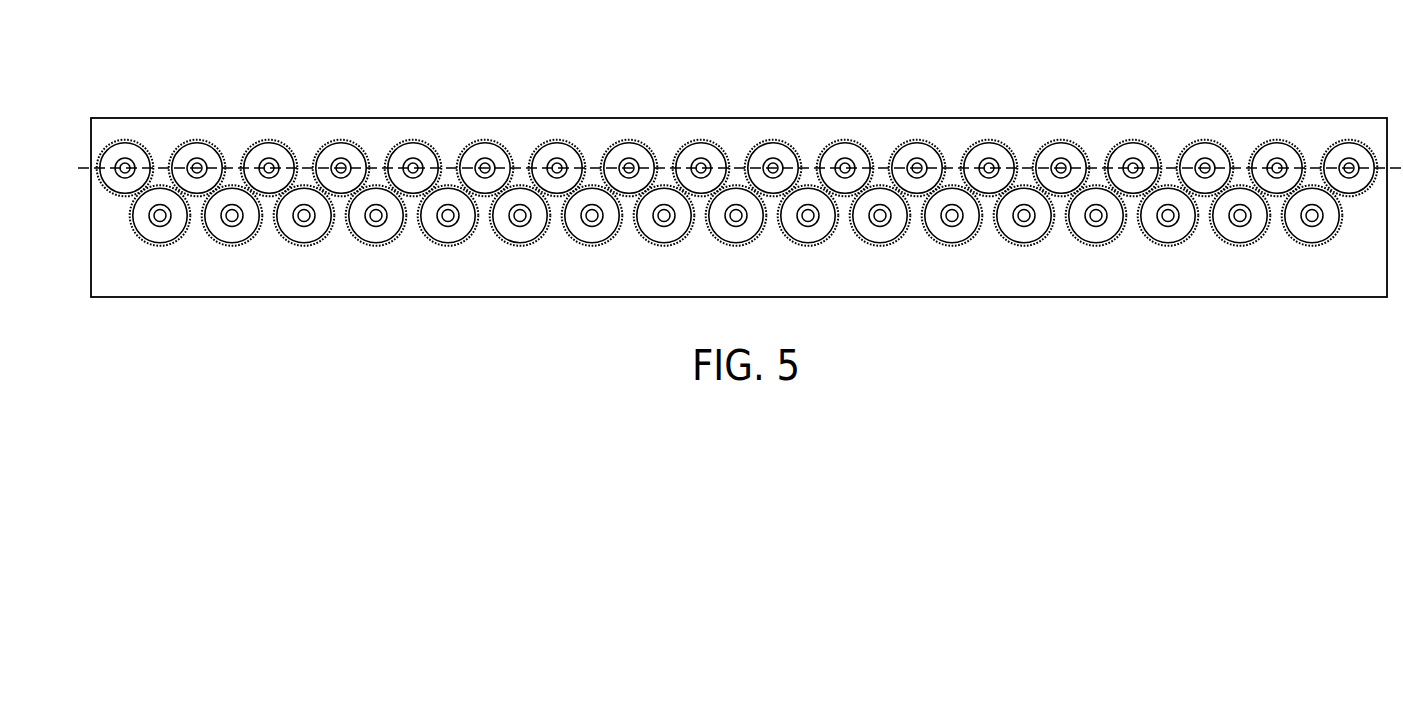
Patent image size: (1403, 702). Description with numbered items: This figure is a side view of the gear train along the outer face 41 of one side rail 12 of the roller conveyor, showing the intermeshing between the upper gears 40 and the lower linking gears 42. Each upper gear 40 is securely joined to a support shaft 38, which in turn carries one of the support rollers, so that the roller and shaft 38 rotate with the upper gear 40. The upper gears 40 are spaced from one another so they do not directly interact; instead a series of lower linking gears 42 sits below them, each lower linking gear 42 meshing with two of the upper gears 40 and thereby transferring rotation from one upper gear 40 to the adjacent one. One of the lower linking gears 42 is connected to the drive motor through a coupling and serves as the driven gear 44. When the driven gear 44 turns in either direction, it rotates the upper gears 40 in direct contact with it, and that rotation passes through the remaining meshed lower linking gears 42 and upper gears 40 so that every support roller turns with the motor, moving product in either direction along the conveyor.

The side rail 12 is at (1138, 72).
The support shaft 38 is at (422, 162).
The upper gear 40 is at (178, 147).
The outer face 41 is at (127, 272).
The lower linking gear 42 is at (307, 245).
The driven gear 44 is at (442, 235).